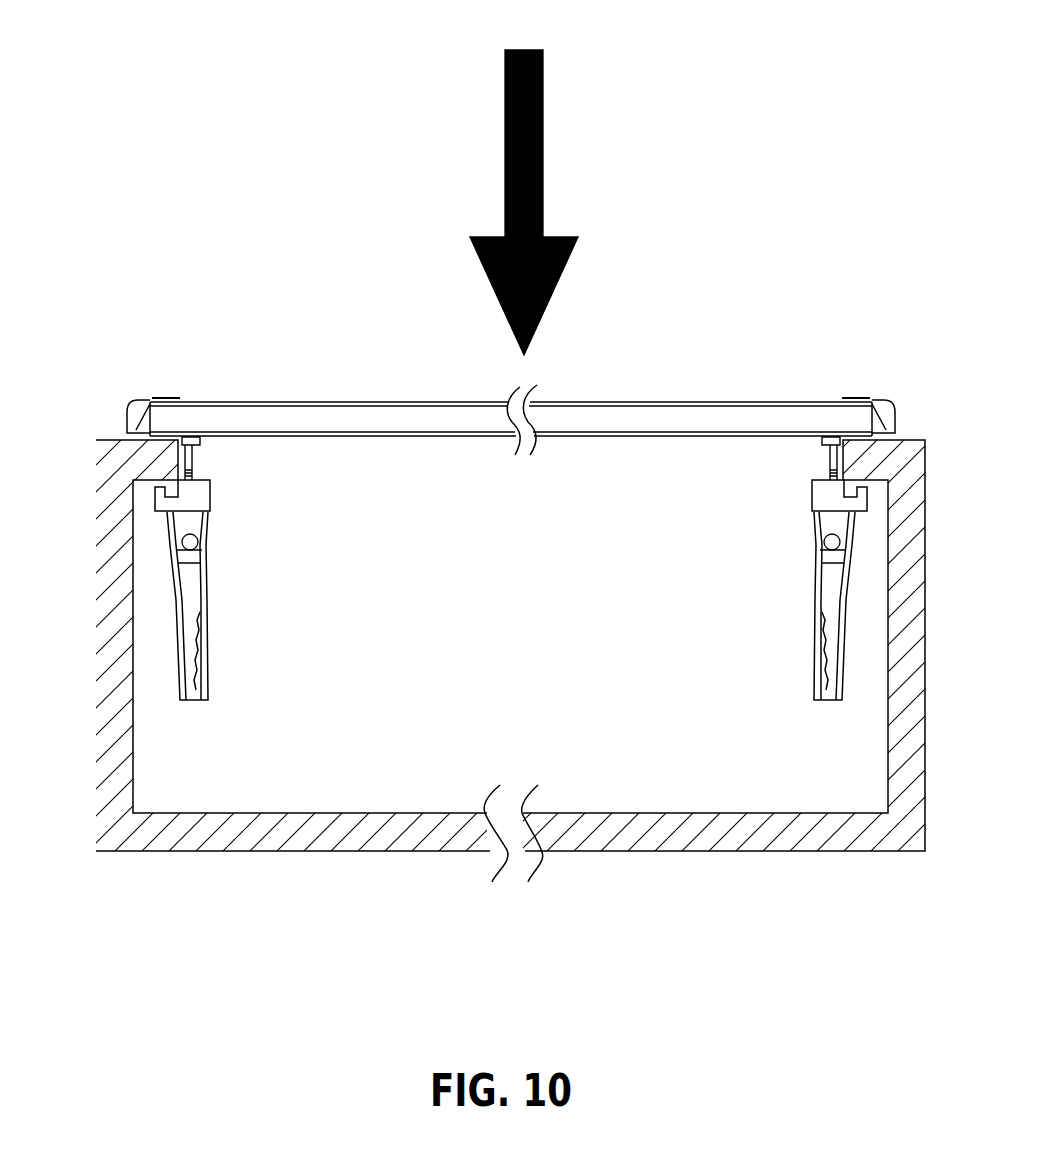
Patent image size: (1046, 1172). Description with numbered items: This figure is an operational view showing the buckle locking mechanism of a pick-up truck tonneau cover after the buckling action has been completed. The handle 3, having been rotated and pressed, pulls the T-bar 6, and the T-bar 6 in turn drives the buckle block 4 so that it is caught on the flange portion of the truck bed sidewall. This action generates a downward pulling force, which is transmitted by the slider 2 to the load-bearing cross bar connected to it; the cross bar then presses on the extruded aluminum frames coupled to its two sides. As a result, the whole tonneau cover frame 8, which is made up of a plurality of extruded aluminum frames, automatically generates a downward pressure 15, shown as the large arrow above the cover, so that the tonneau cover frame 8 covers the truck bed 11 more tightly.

The downward pressure 15 is at (542, 177).
The slider 2 is at (385, 403).
The tonneau cover frame 8 is at (127, 412).
The T-bar 6 is at (195, 465).
The buckle block 4 is at (197, 500).
The handle 3 is at (207, 698).
The truck bed 11 is at (192, 838).